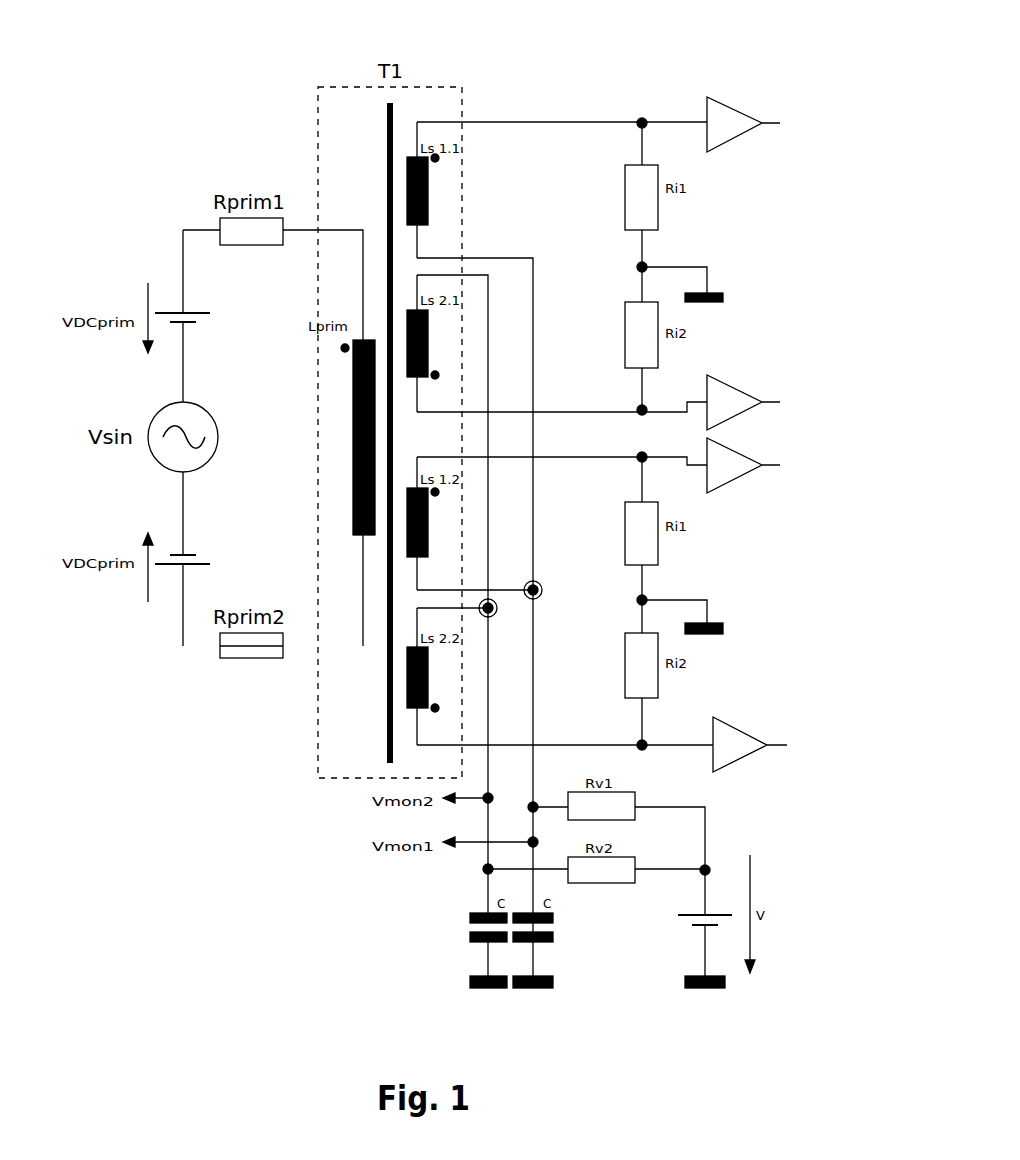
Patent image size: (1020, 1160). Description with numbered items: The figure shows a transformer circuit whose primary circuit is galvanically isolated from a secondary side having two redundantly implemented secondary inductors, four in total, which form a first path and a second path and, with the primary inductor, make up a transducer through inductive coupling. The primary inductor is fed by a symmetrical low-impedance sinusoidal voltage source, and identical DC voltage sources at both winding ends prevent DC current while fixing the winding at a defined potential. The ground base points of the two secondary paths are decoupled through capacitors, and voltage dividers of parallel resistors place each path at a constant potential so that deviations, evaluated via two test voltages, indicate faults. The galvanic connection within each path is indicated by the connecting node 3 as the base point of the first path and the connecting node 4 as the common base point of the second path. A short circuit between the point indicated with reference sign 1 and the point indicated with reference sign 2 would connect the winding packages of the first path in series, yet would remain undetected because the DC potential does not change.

The point indicated with reference sign 1 is at (602, 123).
The point indicated with reference sign 2 is at (607, 457).
The connecting node 3 is at (542, 593).
The connecting node 4 is at (493, 615).